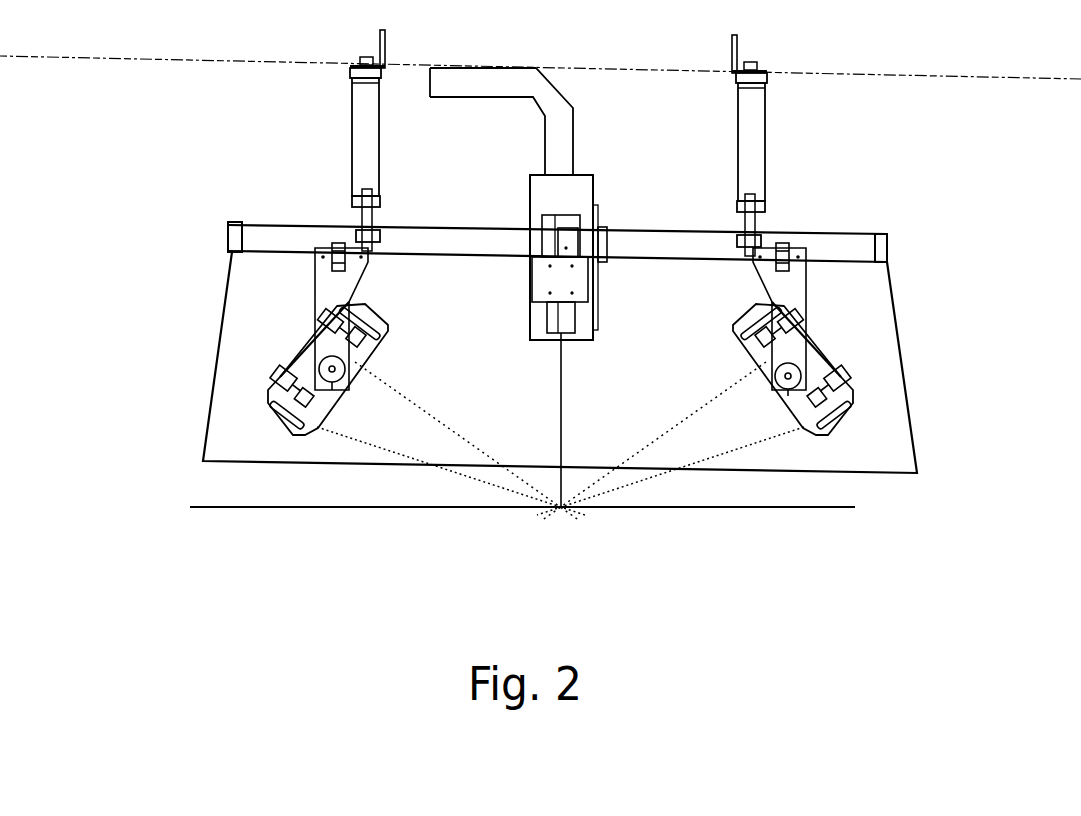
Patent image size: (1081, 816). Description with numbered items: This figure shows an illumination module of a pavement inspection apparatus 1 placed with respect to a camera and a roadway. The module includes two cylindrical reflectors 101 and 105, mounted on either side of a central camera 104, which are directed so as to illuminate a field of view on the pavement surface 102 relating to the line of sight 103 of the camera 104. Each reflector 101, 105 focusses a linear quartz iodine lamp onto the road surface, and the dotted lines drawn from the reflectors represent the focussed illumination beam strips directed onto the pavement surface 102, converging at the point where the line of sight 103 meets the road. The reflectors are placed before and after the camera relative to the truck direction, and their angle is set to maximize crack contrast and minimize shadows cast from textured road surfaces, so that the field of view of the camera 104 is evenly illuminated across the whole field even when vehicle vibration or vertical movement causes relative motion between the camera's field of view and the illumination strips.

The scanning apparatus 1 is at (956, 245).
The reflector 101 is at (292, 365).
The pavement surface 102 is at (758, 510).
The line of sight 103 is at (565, 382).
The camera 104 is at (530, 288).
The reflector 105 is at (823, 373).